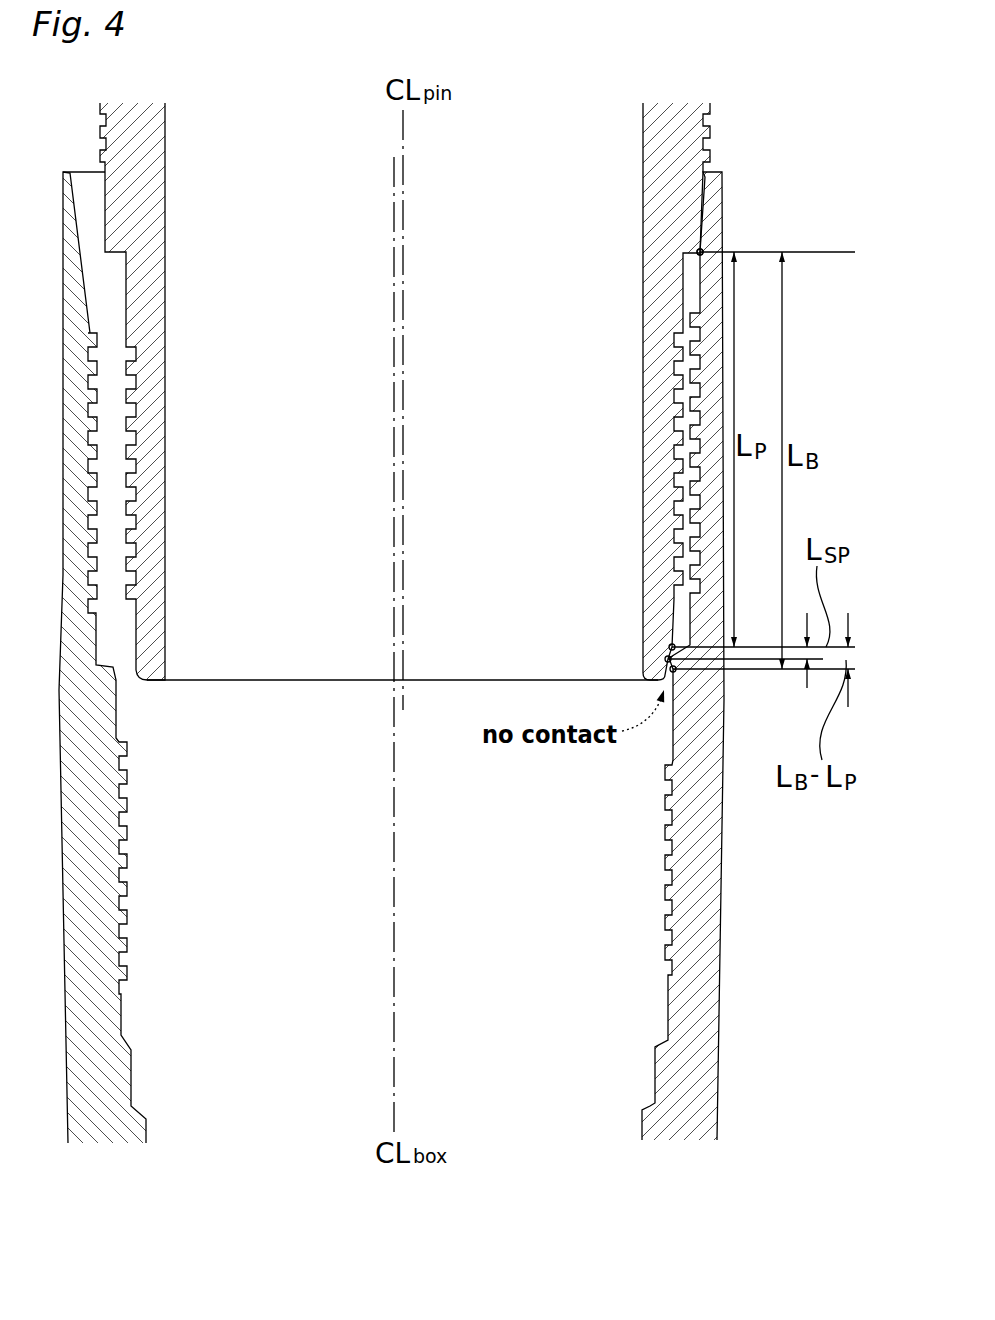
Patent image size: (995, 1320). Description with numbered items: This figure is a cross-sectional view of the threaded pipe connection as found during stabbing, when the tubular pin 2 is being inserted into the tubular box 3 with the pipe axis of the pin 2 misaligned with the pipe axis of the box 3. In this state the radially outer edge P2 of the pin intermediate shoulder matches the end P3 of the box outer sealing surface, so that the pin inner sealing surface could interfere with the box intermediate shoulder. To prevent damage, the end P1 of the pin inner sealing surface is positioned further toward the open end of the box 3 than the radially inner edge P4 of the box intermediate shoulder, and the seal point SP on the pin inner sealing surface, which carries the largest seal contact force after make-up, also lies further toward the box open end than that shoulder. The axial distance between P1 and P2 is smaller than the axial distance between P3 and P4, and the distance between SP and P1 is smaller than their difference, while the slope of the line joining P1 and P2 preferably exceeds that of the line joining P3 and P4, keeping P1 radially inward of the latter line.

The pin 2 is at (643, 432).
The box 3 is at (726, 860).
The end of the pin inner sealing surface P1 is at (667, 643).
The radially outer edge of the pin intermediate shoulder P2 is at (702, 252).
The end of the box outer sealing surface P3 is at (781, 216).
The radially inner edge of the box intermediate shoulder P4 is at (677, 673).
The seal point SP is at (663, 661).